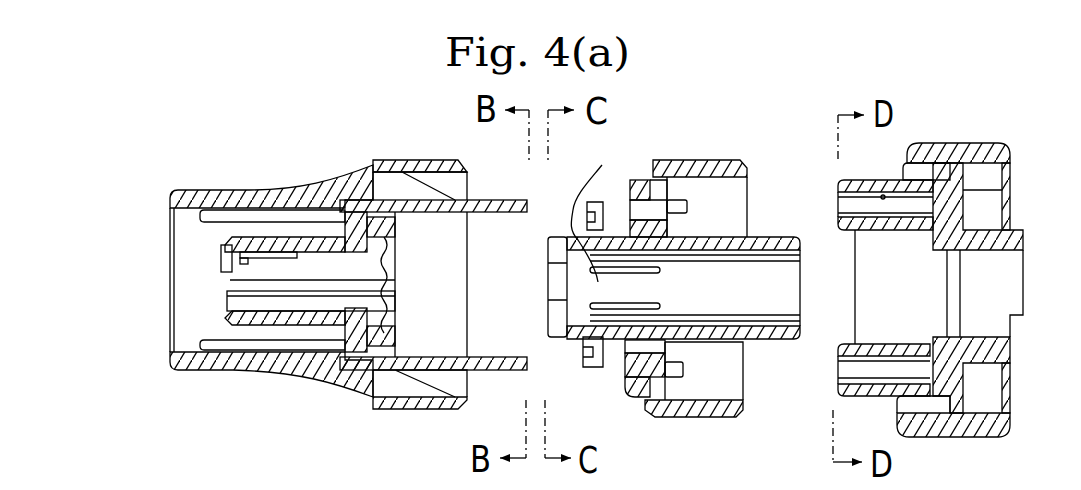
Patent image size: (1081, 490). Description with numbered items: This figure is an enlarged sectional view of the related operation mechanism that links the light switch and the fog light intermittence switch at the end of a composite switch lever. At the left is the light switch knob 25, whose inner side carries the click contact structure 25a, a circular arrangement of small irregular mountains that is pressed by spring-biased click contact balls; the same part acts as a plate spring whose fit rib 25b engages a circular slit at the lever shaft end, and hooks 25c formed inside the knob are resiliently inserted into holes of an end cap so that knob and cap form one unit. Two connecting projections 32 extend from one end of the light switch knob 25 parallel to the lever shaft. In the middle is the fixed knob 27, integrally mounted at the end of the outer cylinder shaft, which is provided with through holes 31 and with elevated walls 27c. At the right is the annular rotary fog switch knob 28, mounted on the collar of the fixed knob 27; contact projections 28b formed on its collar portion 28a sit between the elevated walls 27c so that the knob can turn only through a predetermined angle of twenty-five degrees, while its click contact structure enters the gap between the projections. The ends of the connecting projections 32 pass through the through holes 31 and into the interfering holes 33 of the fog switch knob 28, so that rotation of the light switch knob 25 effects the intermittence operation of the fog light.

The light switch knob 25 is at (388, 158).
The click contact structure 25a is at (261, 218).
The fit rib 25b is at (222, 272).
The hook 25c is at (233, 280).
The connecting projection 32 is at (497, 213).
The fixed knob 27 is at (716, 156).
The elevated wall 27c is at (687, 204).
The through hole 31 is at (640, 203).
The rotary fog switch knob 28 is at (985, 142).
The collar portion 28a is at (880, 405).
The contact projection 28b is at (837, 347).
The interfering hole 33 is at (887, 180).